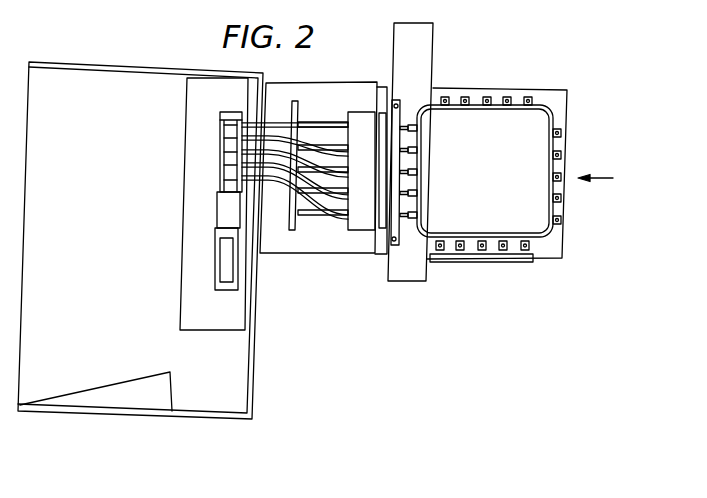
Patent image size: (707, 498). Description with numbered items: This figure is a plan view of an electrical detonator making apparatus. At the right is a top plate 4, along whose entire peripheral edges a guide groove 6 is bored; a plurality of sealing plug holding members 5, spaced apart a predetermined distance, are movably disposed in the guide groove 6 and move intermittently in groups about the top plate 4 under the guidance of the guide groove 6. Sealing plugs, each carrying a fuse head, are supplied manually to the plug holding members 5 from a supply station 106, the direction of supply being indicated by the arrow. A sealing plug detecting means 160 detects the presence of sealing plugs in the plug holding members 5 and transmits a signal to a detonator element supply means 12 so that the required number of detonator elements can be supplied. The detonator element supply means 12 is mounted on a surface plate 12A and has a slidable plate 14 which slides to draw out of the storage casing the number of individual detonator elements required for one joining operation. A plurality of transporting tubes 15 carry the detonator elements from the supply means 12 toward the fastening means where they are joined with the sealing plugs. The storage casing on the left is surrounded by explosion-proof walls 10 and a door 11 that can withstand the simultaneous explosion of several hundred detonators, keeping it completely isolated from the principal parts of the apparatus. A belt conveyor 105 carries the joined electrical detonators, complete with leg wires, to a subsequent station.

The top plate 4 is at (536, 223).
The sealing plug holding members 5 is at (556, 223).
The guide groove 6 is at (553, 118).
The explosion-proof walls 10 is at (254, 346).
The door 11 is at (106, 411).
The detonator element supply means 12 is at (220, 208).
The surface plate 12A is at (240, 308).
The slidable plate 14 is at (232, 118).
The transporting tubes 15 is at (317, 228).
The belt conveyor 105 is at (400, 282).
The supply station 106 is at (600, 193).
The sealing plug detecting means 160 is at (448, 258).